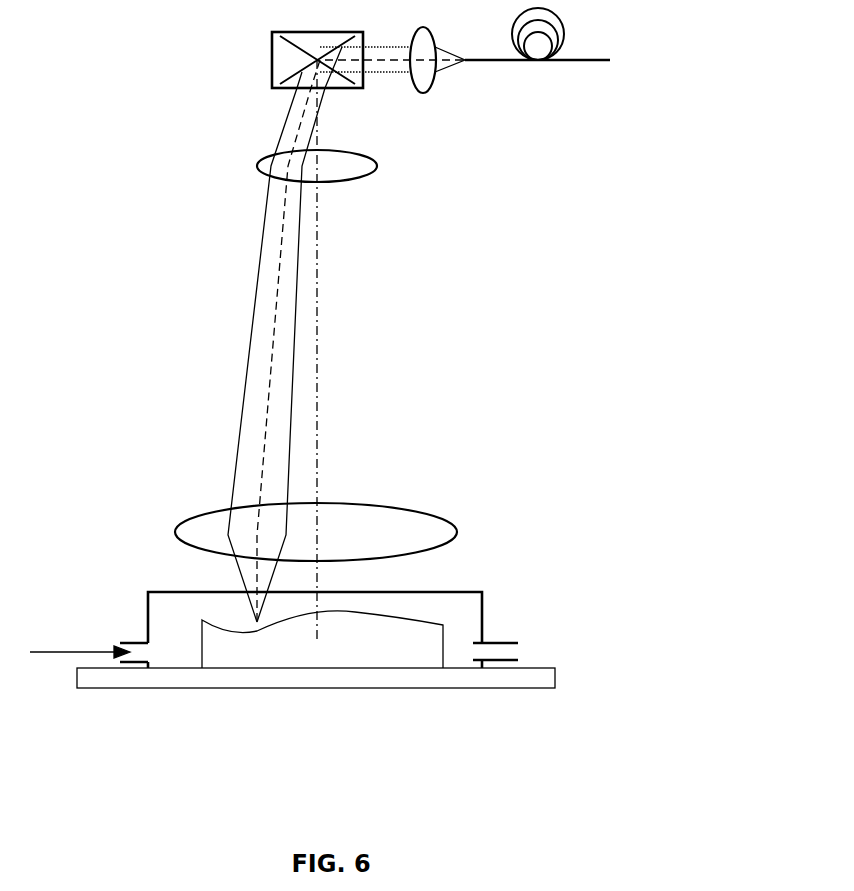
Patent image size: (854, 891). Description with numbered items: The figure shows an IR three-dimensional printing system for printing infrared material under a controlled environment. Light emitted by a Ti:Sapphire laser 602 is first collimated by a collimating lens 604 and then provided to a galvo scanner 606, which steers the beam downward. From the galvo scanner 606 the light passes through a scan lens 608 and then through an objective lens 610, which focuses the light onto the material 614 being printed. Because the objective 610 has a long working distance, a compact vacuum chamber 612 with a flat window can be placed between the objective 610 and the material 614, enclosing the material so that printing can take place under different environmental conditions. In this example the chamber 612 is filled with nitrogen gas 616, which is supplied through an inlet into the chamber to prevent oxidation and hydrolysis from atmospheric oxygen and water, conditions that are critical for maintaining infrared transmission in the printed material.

The Ti:Sapphire laser 602 is at (604, 60).
The collimating lens 604 is at (421, 82).
The galvo scanner 606 is at (272, 45).
The scan lens 608 is at (258, 160).
The objective lens 610 is at (192, 522).
The vacuum chamber 612 is at (477, 584).
The material 614 is at (390, 655).
The nitrogen gas 616 is at (80, 632).